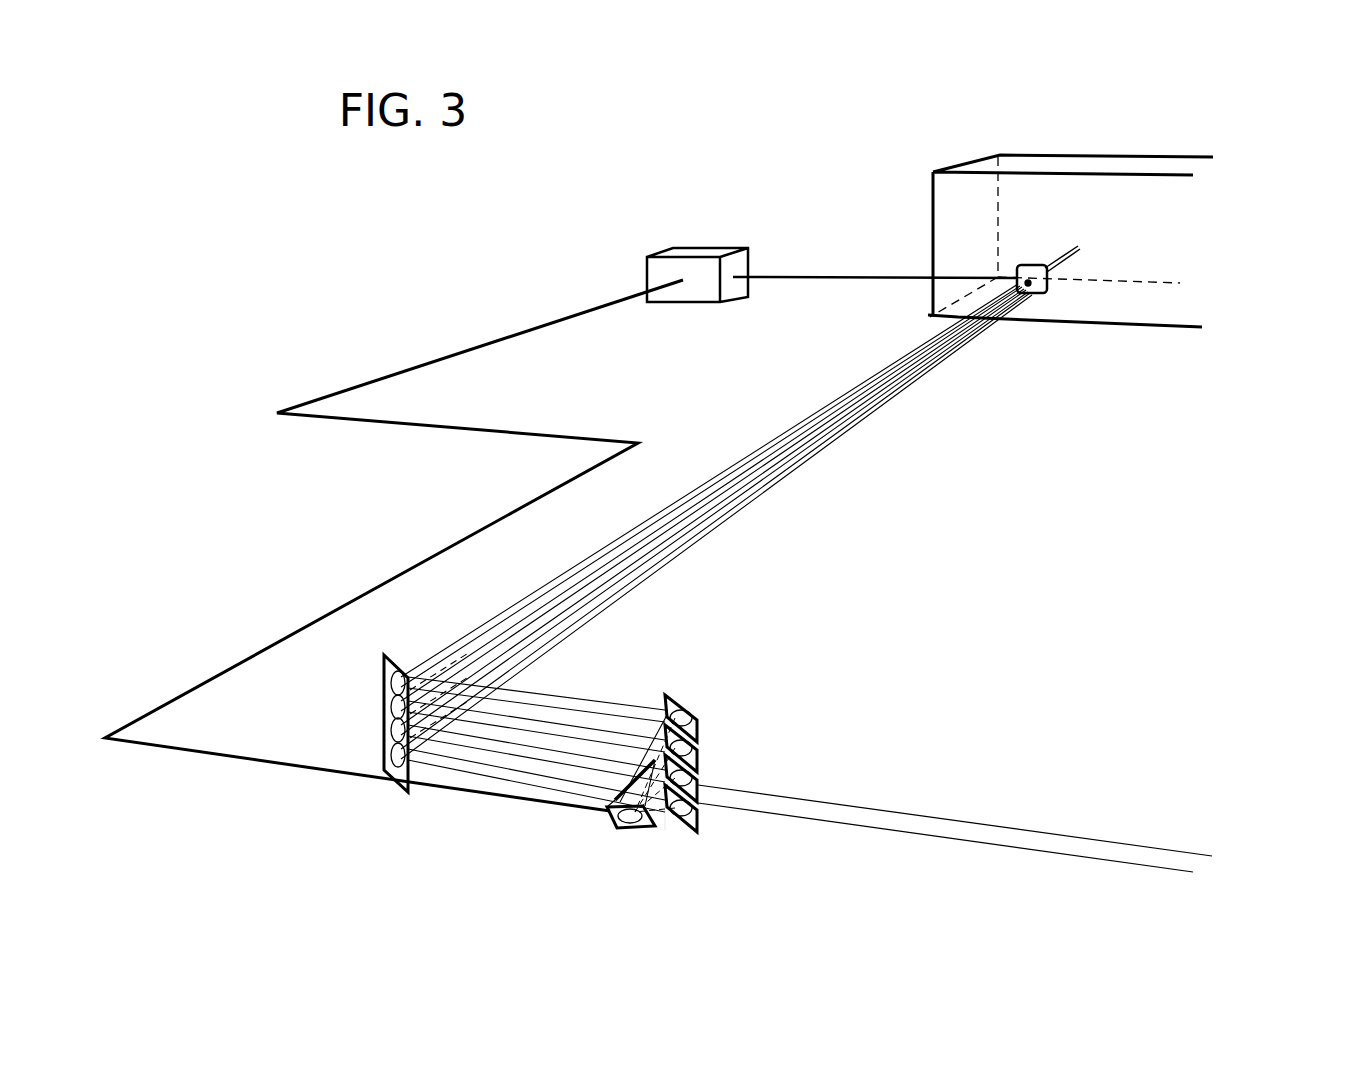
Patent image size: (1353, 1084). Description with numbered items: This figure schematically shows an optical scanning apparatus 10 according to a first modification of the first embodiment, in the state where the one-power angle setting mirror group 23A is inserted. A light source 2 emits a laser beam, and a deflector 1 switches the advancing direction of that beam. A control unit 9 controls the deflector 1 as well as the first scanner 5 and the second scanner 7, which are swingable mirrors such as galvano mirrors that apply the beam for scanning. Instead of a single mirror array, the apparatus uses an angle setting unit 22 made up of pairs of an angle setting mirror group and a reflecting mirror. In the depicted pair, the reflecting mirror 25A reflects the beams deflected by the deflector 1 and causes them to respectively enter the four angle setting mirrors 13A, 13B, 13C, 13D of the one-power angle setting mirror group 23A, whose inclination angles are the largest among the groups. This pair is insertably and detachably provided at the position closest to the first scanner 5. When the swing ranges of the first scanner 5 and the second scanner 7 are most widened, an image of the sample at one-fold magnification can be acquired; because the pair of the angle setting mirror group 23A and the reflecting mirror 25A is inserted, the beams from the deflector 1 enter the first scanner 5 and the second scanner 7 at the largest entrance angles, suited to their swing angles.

The deflector 1 is at (1030, 298).
The light source 2 is at (933, 196).
The first scanner 5 is at (635, 830).
The second scanner 7 is at (630, 780).
The control unit 9 is at (717, 250).
The optical scanning apparatus 10 is at (1212, 473).
The angle setting mirror 13A is at (698, 720).
The angle setting mirror 13B is at (698, 754).
The angle setting mirror 13C is at (698, 784).
The angle setting mirror 13D is at (697, 817).
The angle setting unit 22 is at (377, 788).
The one-power angle setting mirror group 23A is at (697, 700).
The reflecting mirror 25A is at (384, 690).